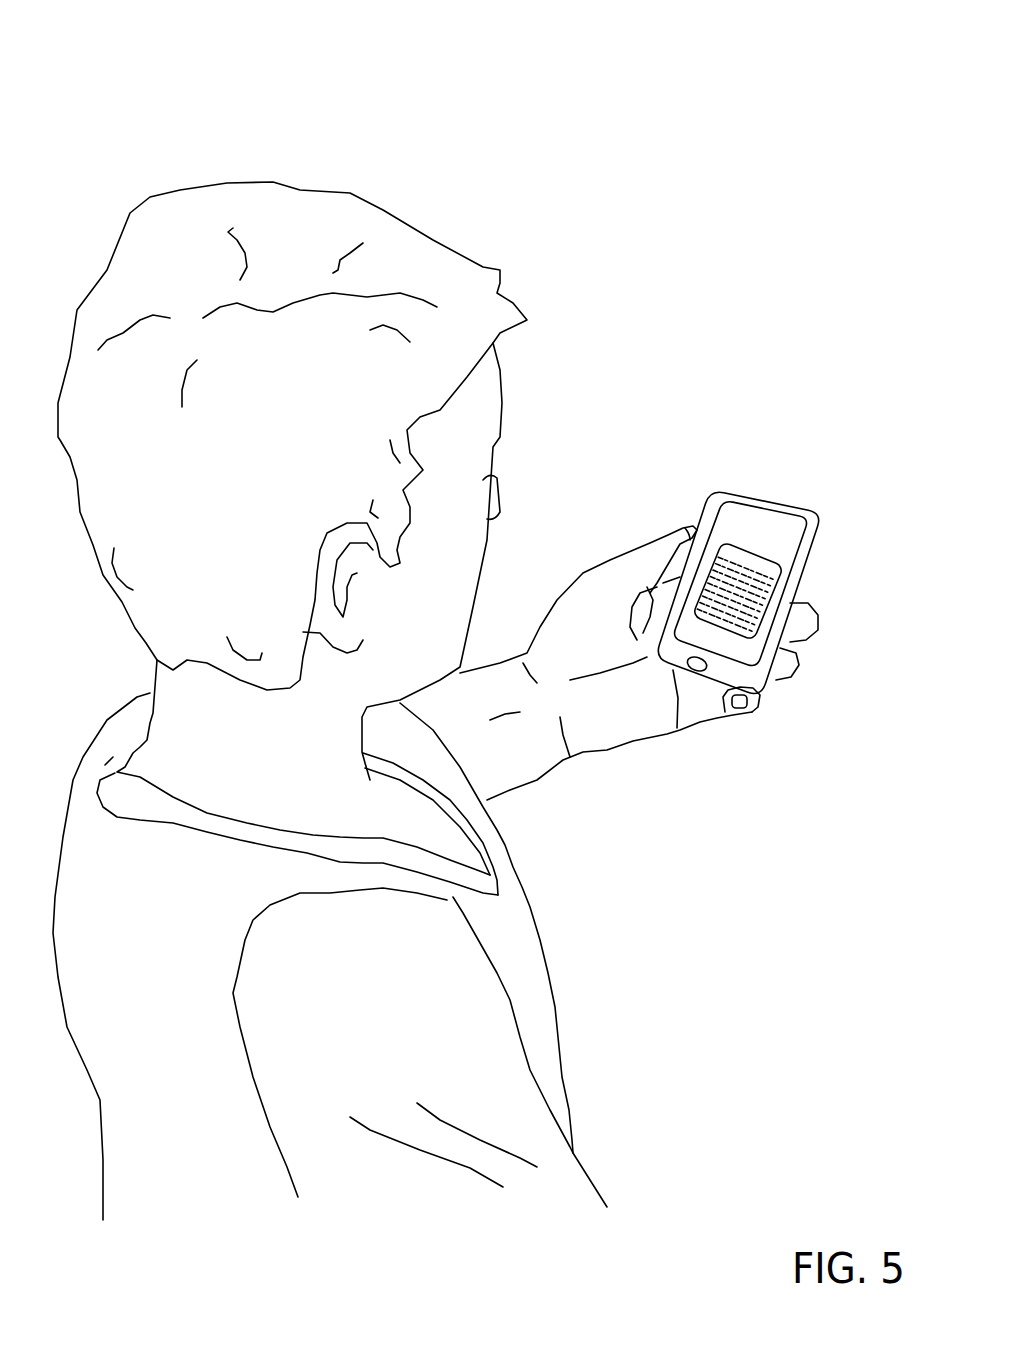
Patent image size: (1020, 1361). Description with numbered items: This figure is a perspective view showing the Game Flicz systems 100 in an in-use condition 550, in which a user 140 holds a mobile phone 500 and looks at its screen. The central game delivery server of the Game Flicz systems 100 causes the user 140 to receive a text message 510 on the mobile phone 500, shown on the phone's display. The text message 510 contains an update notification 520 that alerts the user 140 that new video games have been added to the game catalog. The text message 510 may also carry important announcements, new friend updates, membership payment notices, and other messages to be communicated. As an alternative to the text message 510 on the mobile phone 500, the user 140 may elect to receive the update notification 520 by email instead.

The Game Flicz systems 100 is at (667, 108).
The in-use condition 550 is at (707, 148).
The user 140 is at (206, 911).
The mobile phone 500 is at (748, 474).
The text message 510 is at (768, 510).
The update notification 520 is at (770, 604).